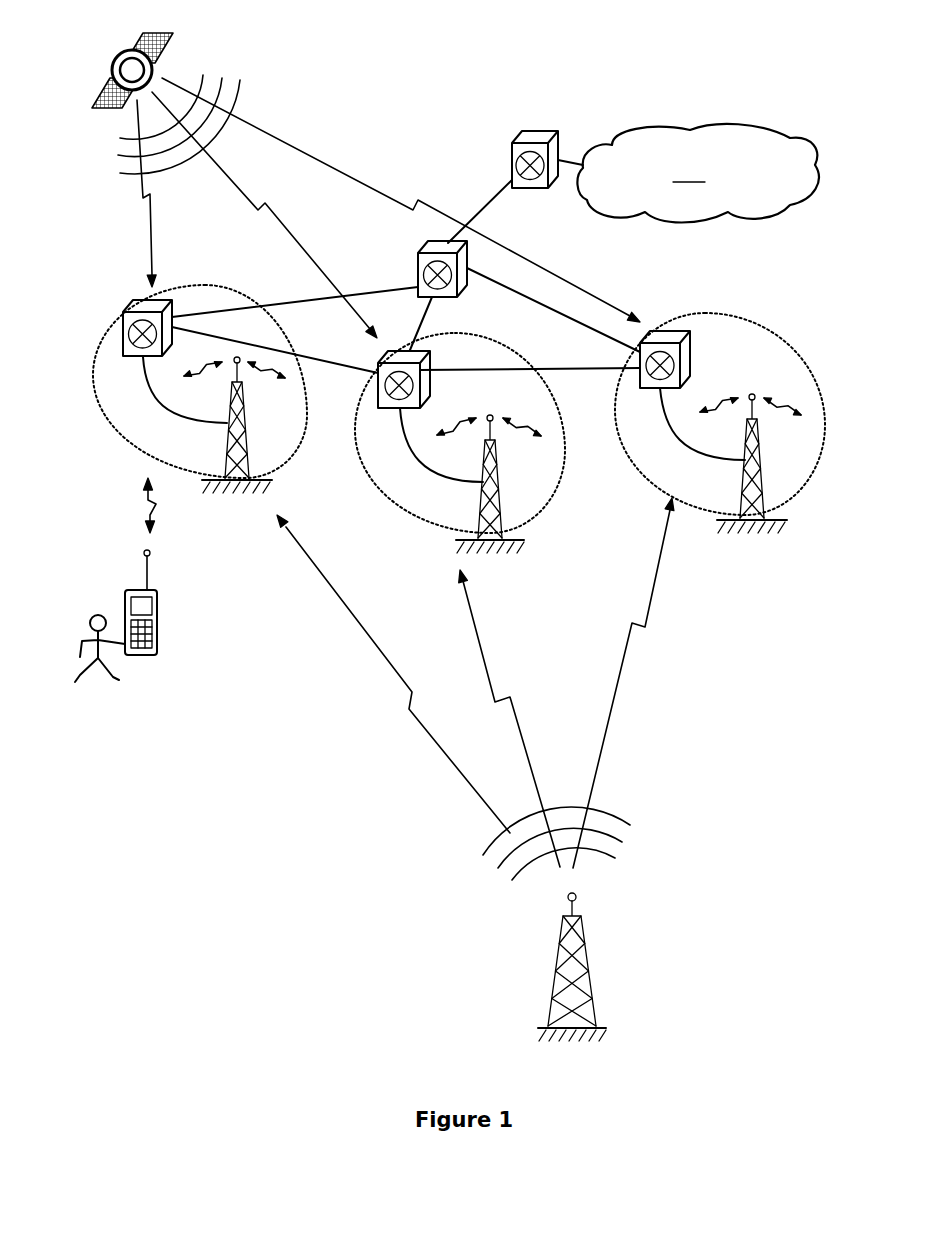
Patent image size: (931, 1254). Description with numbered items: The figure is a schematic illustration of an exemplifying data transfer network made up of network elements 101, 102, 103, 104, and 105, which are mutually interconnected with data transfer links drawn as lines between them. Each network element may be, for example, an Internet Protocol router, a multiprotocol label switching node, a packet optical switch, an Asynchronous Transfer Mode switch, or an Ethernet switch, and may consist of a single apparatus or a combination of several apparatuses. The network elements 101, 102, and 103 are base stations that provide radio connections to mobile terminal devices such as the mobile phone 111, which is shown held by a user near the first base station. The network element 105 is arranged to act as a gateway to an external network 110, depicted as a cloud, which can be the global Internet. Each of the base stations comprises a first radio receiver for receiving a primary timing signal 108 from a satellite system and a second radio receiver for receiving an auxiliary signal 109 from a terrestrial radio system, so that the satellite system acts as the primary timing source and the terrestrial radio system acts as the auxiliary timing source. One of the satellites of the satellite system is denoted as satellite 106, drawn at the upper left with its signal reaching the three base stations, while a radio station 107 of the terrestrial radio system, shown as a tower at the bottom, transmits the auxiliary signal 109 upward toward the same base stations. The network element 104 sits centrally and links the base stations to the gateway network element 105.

The network element 101 is at (176, 287).
The network element 102 is at (403, 503).
The network element 103 is at (753, 328).
The network element 104 is at (418, 256).
The network element 105 is at (512, 158).
The satellite 106 is at (112, 60).
The radio station 107 is at (595, 972).
The primary timing signal 108 is at (258, 100).
The auxiliary signal 109 is at (648, 846).
The external network 110 is at (697, 173).
The mobile phone 111 is at (158, 623).